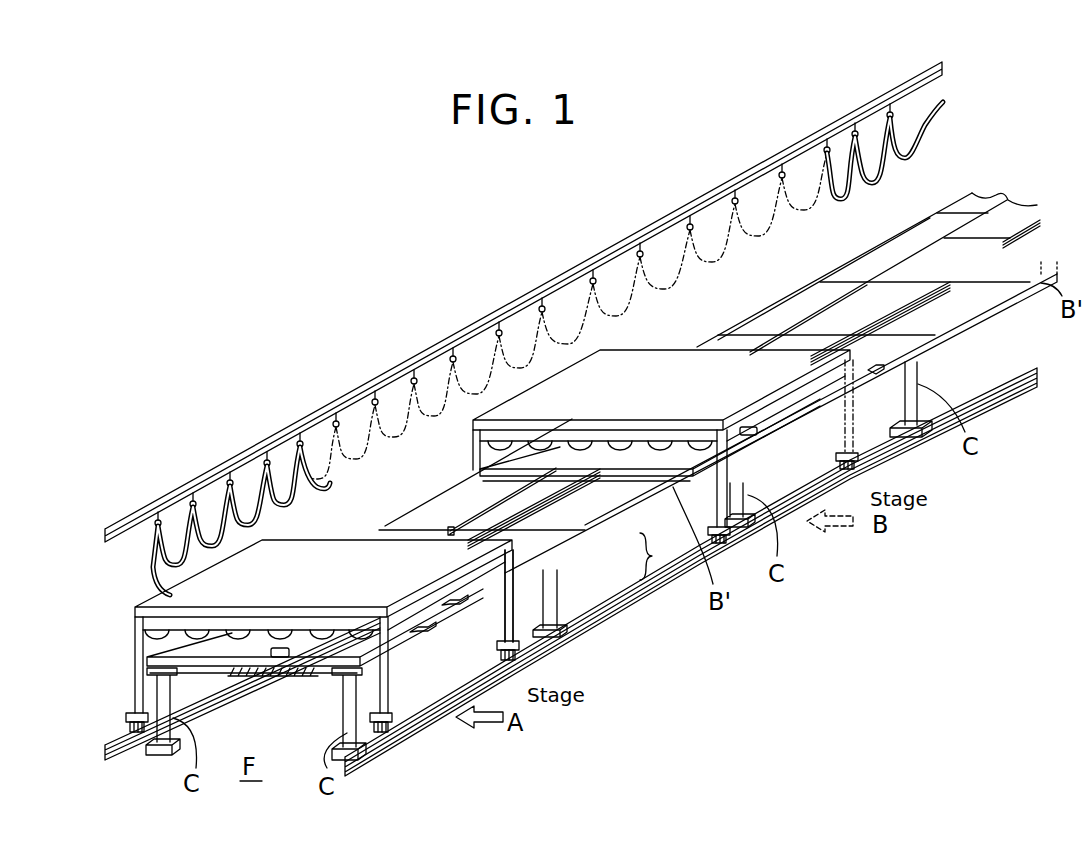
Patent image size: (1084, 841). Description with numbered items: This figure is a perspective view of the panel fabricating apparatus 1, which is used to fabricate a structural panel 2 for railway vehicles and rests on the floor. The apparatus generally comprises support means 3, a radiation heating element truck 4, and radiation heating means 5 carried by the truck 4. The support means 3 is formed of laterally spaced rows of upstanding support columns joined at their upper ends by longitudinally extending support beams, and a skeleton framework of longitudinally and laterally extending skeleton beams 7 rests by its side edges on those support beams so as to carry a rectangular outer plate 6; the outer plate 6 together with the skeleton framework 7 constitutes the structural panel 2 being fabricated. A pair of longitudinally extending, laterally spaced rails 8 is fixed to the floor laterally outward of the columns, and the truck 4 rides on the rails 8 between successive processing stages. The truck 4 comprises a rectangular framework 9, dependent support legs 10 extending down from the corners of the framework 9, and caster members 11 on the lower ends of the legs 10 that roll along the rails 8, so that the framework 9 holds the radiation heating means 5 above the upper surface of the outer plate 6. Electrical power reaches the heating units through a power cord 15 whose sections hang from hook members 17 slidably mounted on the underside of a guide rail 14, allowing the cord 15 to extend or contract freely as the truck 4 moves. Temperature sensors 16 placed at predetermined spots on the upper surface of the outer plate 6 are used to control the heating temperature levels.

The panel fabricating apparatus 1 is at (657, 156).
The structural panel 2 is at (314, 677).
The support means 3 is at (198, 700).
The radiation heating element truck 4 is at (590, 587).
The radiation heating means 5 is at (320, 556).
The outer plate 6 is at (447, 602).
The skeleton beams 7 is at (302, 667).
The rails 8 is at (203, 701).
The rectangular framework 9 is at (515, 544).
The support legs 10 is at (136, 658).
The caster members 11 is at (125, 725).
The guide rail 14 is at (520, 298).
The power cord 15 is at (152, 568).
The temperature sensors 16 is at (287, 669).
The hook members 17 is at (309, 430).